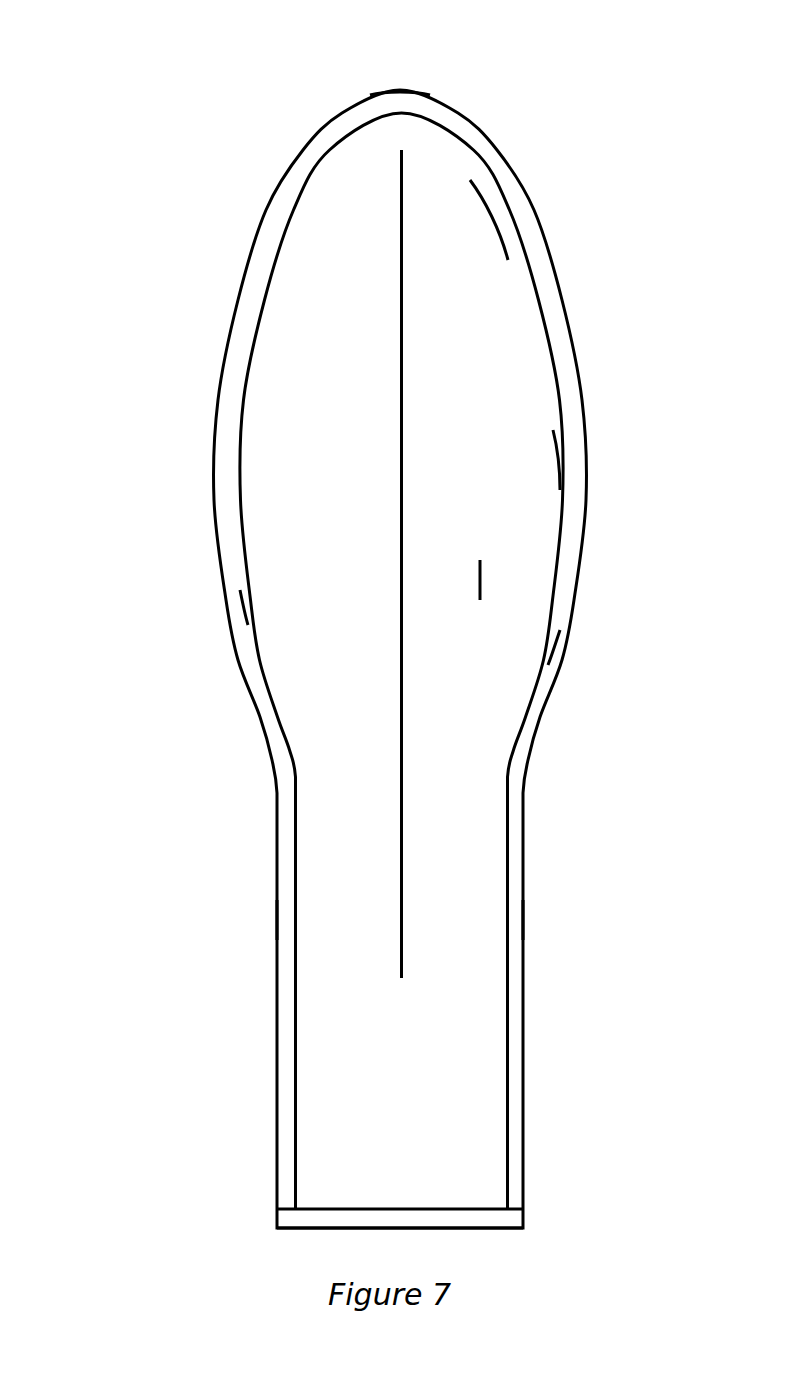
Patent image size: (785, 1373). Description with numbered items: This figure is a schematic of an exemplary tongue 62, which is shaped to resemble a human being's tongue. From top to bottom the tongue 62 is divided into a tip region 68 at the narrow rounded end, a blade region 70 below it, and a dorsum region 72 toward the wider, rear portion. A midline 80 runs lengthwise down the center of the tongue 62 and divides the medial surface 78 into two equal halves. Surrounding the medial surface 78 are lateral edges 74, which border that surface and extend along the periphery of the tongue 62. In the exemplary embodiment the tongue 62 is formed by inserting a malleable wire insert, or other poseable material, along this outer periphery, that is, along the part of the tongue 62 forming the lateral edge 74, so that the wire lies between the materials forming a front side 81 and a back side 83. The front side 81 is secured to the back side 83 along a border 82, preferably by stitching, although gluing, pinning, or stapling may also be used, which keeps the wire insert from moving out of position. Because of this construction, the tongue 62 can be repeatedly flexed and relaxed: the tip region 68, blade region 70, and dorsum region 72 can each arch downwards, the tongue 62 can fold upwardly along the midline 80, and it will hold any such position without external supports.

The tongue 62 is at (500, 65).
The tip region 68 is at (410, 113).
The blade region 70 is at (475, 192).
The front side 81 is at (495, 243).
The midline 80 is at (403, 365).
The dorsum region 72 is at (535, 455).
The medial surface 78 is at (525, 566).
The border 82 is at (247, 603).
The back side 83 is at (260, 918).
The lateral edges 74 is at (520, 1005).